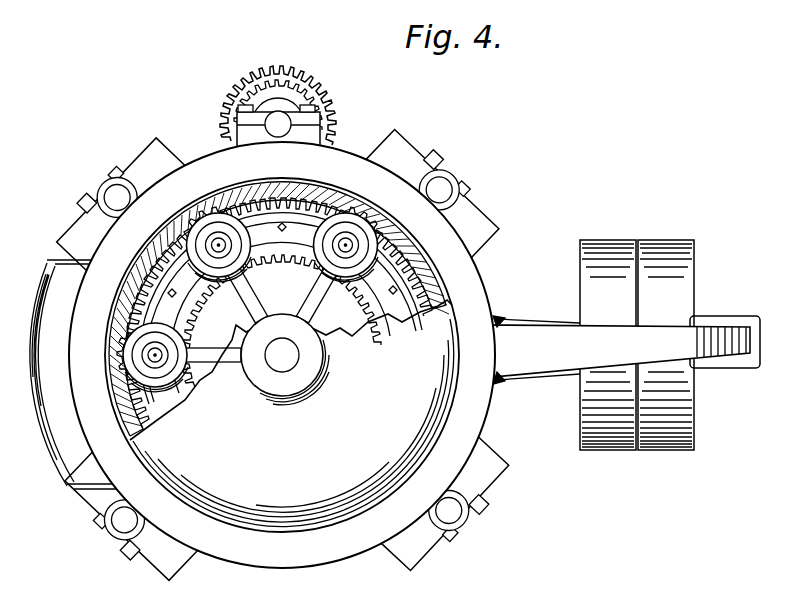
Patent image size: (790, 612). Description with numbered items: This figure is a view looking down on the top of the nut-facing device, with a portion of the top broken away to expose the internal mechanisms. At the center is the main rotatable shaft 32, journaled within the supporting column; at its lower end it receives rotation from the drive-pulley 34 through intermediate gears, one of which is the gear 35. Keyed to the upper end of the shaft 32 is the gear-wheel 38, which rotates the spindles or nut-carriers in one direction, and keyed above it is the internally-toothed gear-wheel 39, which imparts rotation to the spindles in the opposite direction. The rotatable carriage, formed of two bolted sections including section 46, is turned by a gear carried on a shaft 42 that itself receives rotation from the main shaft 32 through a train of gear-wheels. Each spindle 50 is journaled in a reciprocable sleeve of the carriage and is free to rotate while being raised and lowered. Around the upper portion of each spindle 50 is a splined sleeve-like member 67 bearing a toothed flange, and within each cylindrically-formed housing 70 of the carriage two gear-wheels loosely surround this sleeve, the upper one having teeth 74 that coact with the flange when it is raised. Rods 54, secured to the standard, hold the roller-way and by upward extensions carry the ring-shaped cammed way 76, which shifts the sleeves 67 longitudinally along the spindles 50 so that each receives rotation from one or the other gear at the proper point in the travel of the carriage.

The main rotatable shaft 32 is at (285, 359).
The drive-pulley 34 is at (628, 246).
The intermediate gear 35 is at (500, 379).
The gear-wheel 38 is at (219, 281).
The internally-toothed gear-wheel 39 is at (320, 197).
The shaft 42 is at (278, 109).
The carriage section 46 is at (320, 254).
The spindle 50 is at (227, 252).
The rods 54 is at (283, 355).
The sleeve-like member 67 is at (212, 238).
The cylindrically-formed housing 70 is at (162, 354).
The teeth 74 is at (205, 213).
The cammed way 76 is at (479, 283).